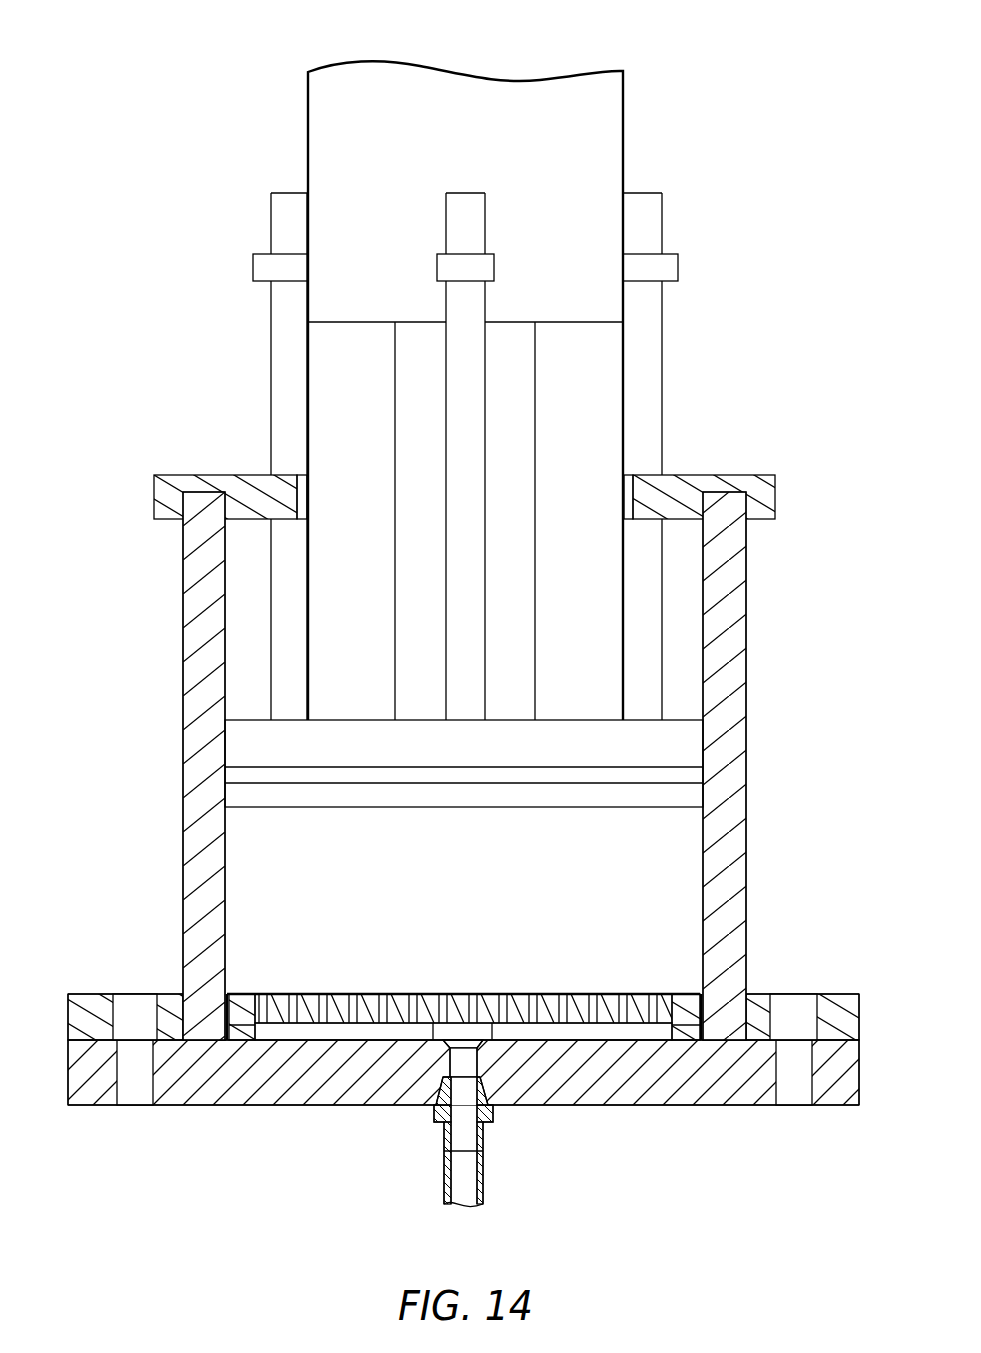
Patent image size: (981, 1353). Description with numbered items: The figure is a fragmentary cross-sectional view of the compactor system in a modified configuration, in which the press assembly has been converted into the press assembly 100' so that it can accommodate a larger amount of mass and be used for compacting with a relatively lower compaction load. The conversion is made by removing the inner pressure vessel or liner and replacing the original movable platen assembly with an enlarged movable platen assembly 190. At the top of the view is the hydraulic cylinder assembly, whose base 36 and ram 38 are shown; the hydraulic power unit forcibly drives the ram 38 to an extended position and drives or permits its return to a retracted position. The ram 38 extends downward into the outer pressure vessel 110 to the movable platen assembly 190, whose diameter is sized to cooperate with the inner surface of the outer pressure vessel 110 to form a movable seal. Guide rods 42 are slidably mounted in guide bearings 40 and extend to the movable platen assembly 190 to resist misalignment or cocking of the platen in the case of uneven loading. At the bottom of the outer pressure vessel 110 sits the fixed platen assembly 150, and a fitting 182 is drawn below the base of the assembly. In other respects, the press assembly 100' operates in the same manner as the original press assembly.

The press assembly 100' is at (829, 25).
The base 36 is at (489, 140).
The ram 38 is at (510, 383).
The guide bearings 40 is at (435, 254).
The guide rods 42 is at (457, 435).
The outer pressure vessel 110 is at (730, 738).
The fixed platen assembly 150 is at (615, 993).
The outlet fitting 182 is at (478, 1187).
The enlarged movable platen assembly 190 is at (252, 753).